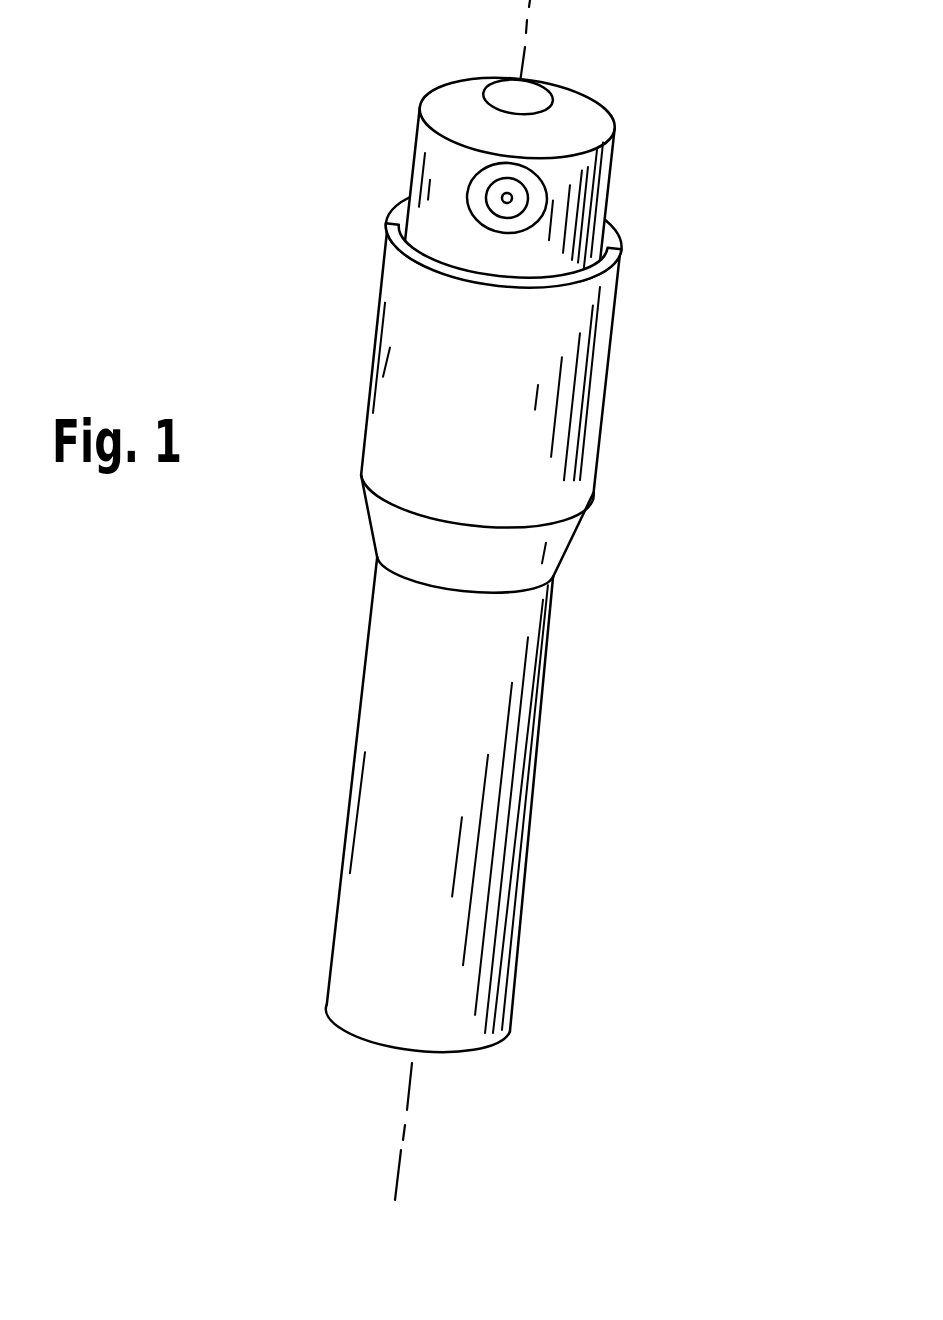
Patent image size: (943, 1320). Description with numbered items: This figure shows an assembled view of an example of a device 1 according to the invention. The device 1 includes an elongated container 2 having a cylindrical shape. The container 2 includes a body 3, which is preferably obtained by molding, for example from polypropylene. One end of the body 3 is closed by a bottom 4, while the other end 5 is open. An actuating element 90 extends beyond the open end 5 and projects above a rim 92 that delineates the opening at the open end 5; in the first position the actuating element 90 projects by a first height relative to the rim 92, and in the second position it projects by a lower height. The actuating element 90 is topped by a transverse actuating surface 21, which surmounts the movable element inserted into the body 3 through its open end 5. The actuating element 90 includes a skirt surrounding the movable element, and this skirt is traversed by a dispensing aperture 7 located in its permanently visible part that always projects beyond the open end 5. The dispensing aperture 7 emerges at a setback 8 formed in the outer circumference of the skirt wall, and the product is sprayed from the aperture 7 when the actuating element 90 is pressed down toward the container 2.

The device 1 is at (524, 600).
The container 2 is at (482, 716).
The body 3 is at (497, 422).
The bottom 4 is at (457, 1050).
The open end 5 is at (613, 227).
The dispensing aperture 7 is at (507, 199).
The setback 8 is at (497, 233).
The transverse actuating surface 21 is at (578, 112).
The actuating element 90 is at (603, 192).
The rim 92 is at (620, 258).